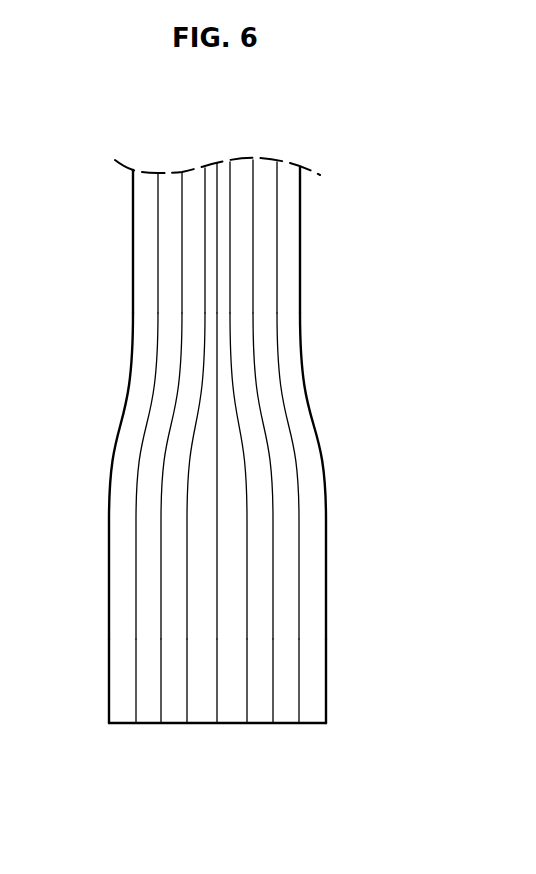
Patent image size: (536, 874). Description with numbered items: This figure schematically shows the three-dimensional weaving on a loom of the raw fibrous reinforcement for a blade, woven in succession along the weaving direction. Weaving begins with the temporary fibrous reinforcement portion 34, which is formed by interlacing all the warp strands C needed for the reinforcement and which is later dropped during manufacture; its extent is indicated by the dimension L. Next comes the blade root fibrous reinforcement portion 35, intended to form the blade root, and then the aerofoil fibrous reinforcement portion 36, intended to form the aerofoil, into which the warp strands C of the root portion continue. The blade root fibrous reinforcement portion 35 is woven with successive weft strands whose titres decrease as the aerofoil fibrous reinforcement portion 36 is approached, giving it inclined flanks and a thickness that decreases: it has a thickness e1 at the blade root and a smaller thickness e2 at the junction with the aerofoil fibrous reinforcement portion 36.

The temporary fibrous reinforcement portion 34 is at (55, 639).
The blade root fibrous reinforcement portion 35 is at (387, 313).
The aerofoil fibrous reinforcement portion 36 is at (300, 313).
The warp strands C is at (175, 395).
The thickness at the blade root e1 is at (326, 785).
The thickness at the junction with the aerofoil fibrous reinforcement portion e2 is at (135, 313).
The length of first portion L is at (71, 639).